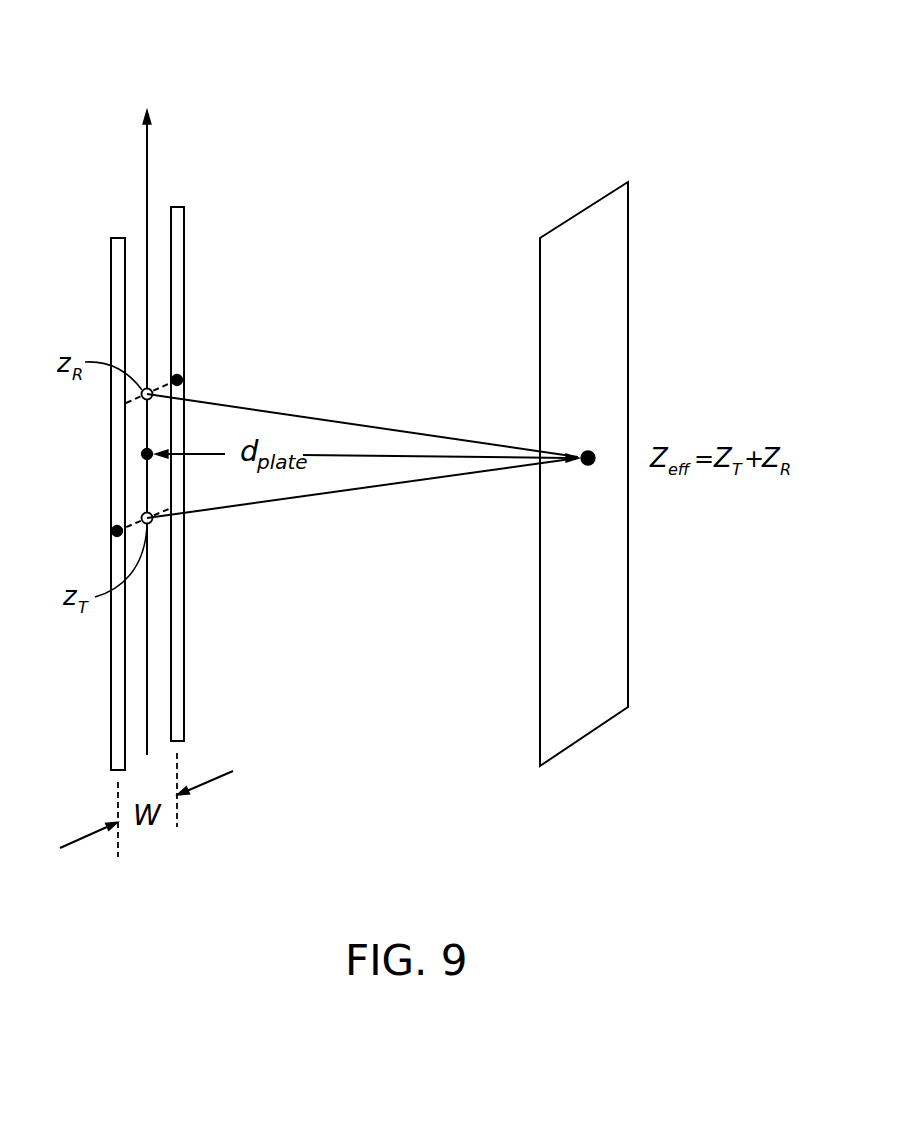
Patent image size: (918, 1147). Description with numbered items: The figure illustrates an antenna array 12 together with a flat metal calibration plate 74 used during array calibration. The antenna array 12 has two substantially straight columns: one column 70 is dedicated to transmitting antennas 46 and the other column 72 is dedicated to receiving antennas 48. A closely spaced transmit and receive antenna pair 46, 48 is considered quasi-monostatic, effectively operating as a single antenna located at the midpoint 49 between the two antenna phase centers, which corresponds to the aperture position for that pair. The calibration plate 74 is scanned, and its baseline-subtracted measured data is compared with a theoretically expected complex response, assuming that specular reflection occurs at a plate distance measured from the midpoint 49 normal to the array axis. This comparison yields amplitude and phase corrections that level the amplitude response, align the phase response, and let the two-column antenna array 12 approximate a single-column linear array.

The antenna array 12 is at (205, 105).
The transmitting antenna 46 is at (115, 527).
The receiving antenna 48 is at (179, 375).
The midpoint 49 is at (143, 450).
The column 70 is at (118, 232).
The column 72 is at (177, 204).
The calibration plate 74 is at (600, 302).